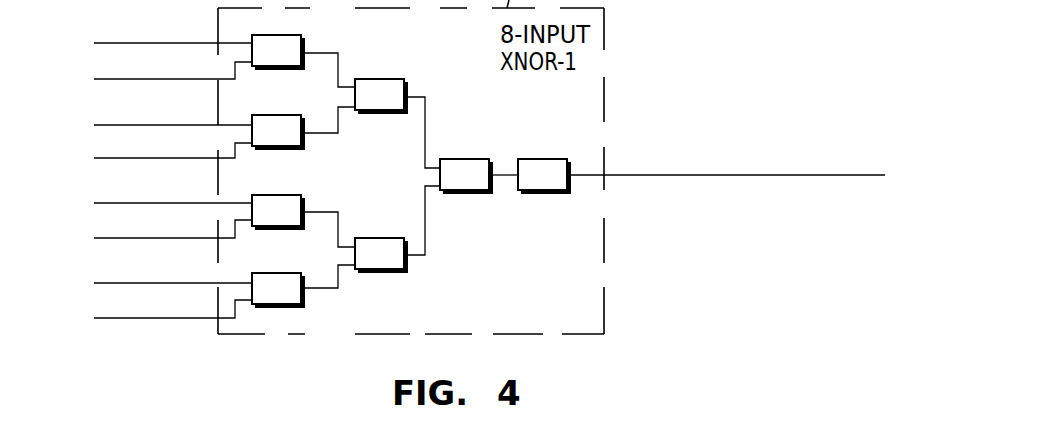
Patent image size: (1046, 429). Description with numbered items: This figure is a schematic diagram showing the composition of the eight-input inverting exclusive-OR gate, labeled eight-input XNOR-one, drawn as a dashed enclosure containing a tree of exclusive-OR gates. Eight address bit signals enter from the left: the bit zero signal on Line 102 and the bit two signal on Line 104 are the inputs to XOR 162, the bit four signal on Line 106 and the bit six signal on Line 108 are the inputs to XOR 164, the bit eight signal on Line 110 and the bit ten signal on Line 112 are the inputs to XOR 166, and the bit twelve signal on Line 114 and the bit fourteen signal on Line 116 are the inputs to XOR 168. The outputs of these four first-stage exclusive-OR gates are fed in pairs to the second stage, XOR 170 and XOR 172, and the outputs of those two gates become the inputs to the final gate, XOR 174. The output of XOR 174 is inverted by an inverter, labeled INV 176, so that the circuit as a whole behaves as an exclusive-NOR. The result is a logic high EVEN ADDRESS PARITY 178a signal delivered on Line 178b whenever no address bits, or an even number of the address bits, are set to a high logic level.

The line 102 is at (100, 44).
The line 104 is at (100, 80).
The line 106 is at (100, 126).
The line 108 is at (100, 159).
The line 110 is at (100, 204).
The line 112 is at (100, 239).
The line 114 is at (100, 284).
The line 116 is at (100, 319).
The XOR 162 is at (305, 37).
The XOR 164 is at (307, 149).
The XOR 166 is at (305, 196).
The XOR 168 is at (307, 308).
The XOR 170 is at (383, 78).
The XOR 172 is at (385, 275).
The XOR 174 is at (450, 158).
The inverter 176 is at (530, 195).
The EVEN ADDRESS PARITY signal 178a is at (876, 145).
The line 178b is at (758, 176).